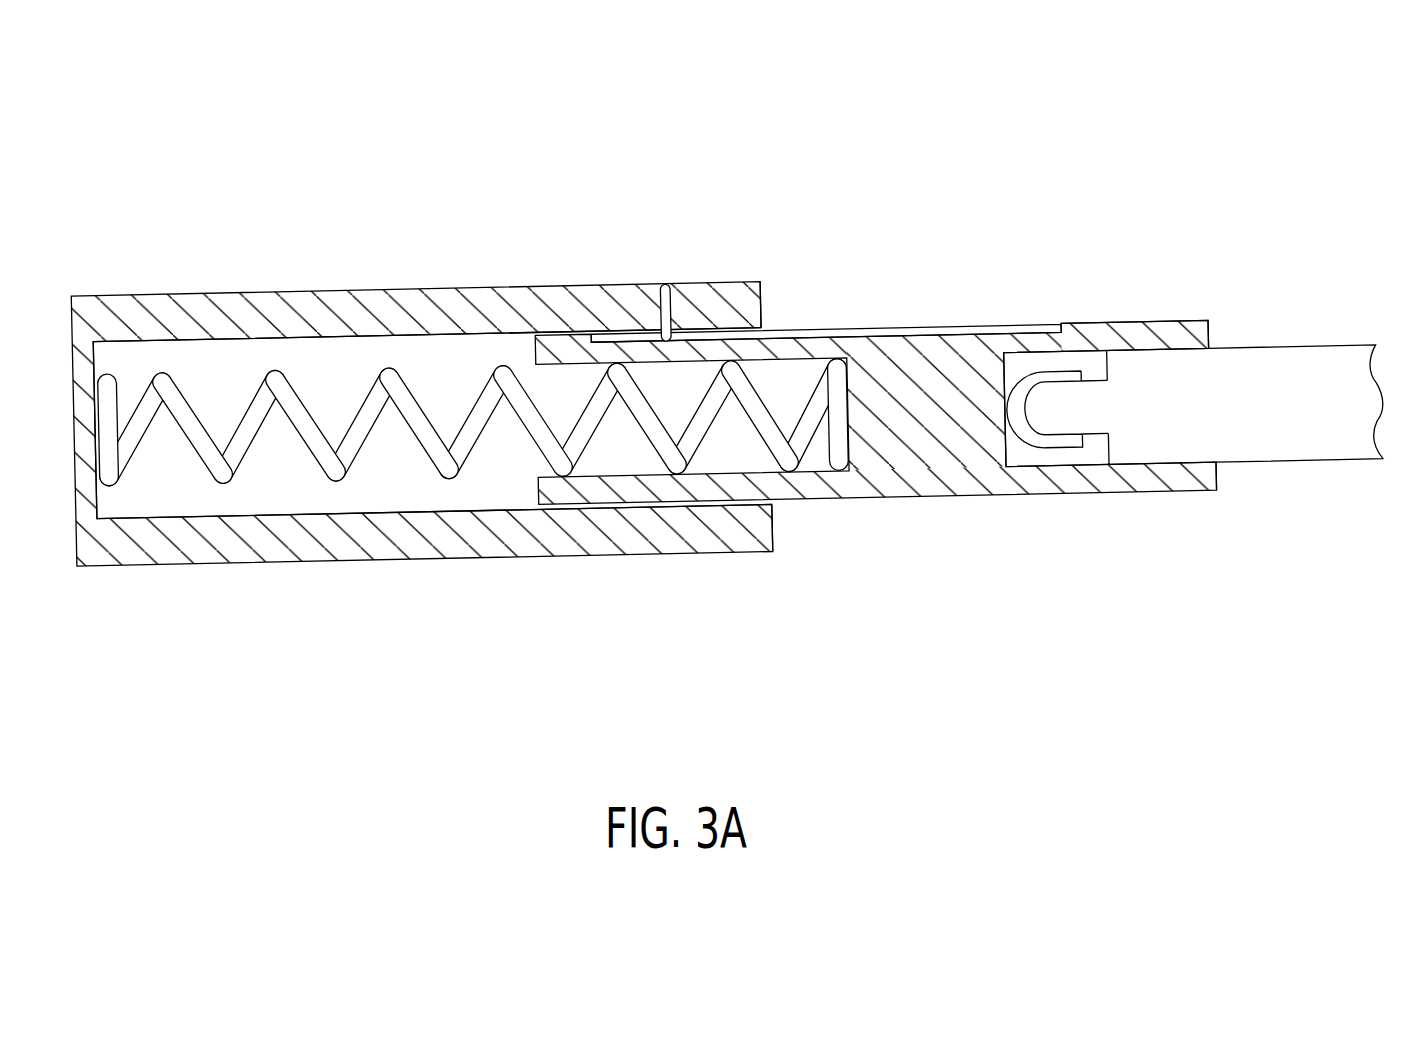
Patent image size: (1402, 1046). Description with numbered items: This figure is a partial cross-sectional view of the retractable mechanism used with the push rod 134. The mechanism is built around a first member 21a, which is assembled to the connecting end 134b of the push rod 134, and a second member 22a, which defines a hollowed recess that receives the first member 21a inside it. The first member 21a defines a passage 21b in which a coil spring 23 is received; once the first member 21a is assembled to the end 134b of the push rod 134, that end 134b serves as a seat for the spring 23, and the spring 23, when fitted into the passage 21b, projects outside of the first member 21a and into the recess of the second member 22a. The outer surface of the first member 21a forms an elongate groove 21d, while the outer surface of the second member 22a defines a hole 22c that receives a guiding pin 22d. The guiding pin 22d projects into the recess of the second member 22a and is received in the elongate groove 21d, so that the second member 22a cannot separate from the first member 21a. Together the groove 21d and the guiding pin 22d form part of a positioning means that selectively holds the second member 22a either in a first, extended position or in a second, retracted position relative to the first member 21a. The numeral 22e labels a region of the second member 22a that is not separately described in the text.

The second member 22a is at (220, 292).
The hole 22c is at (660, 316).
The guiding pin 22d is at (667, 305).
The receiving chamber 22e is at (178, 497).
The coil spring 23 is at (470, 430).
The first member 21a is at (1092, 340).
The passage 21b is at (730, 450).
The elongate groove 21d is at (862, 337).
The push rod 134 is at (1347, 442).
The connecting end 134b is at (1190, 400).